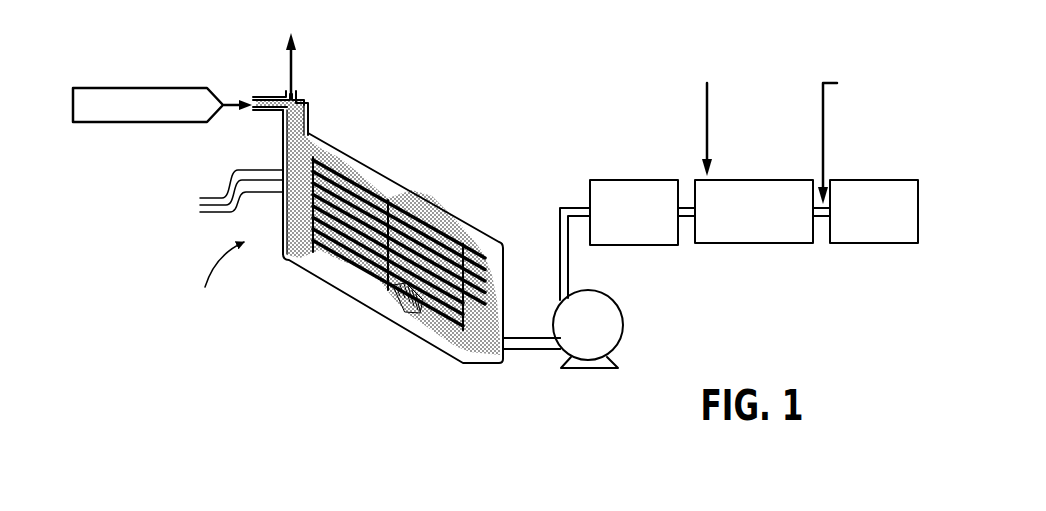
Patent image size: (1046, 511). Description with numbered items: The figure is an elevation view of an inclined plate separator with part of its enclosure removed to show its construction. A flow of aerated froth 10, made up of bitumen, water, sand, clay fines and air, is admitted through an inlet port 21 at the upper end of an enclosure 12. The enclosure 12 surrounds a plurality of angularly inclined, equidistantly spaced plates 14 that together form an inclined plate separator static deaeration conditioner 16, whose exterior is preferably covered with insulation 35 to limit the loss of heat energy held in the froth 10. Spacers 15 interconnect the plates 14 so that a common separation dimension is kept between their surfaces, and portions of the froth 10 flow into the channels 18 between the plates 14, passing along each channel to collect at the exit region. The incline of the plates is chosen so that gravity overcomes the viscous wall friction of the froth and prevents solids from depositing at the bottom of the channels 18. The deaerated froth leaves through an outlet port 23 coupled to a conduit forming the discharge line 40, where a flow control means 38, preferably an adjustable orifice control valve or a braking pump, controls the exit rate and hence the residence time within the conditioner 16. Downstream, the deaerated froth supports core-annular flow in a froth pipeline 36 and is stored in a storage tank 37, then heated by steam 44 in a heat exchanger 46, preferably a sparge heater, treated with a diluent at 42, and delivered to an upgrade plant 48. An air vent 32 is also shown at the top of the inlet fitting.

The aerated froth 10 is at (131, 88).
The enclosure 12 is at (410, 197).
The plates 14 is at (333, 243).
The spacers 15 is at (463, 297).
The static deaeration conditioner 16 is at (215, 284).
The channels 18 is at (220, 197).
The inlet port 21 is at (263, 97).
The outlet port 23 is at (496, 345).
The air vent 32 is at (317, 115).
The insulation 35 is at (405, 300).
The froth pipeline 36 is at (557, 222).
The storage tank 37 is at (660, 245).
The flow control means 38 is at (573, 337).
The discharge line 40 is at (535, 350).
The diluent 42 is at (825, 130).
The steam 44 is at (710, 117).
The heat exchanger 46 is at (765, 245).
The upgrade plant 48 is at (893, 245).